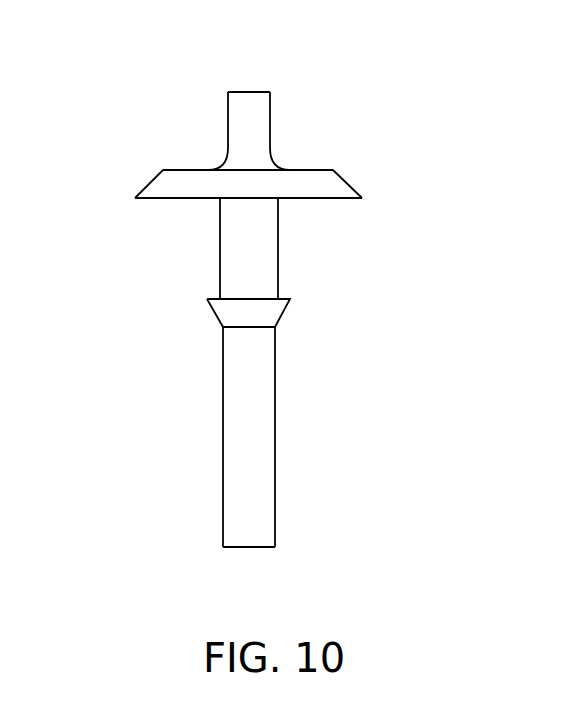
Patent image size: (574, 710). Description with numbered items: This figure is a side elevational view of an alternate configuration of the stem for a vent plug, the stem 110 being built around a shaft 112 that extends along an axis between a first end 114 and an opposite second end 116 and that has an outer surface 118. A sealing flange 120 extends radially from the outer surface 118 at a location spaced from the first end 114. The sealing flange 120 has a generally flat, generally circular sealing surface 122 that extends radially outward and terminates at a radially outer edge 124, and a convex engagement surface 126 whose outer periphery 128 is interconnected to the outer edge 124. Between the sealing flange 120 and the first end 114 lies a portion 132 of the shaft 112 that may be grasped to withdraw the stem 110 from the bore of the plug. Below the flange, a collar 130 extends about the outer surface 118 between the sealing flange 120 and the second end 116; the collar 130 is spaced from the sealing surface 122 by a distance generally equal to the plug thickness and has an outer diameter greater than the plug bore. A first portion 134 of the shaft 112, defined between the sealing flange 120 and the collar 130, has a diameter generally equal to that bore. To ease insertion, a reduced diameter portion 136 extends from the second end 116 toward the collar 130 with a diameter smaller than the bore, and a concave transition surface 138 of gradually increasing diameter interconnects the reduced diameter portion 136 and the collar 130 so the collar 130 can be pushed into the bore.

The stem 110 is at (118, 315).
The shaft 112 is at (275, 405).
The first end 114 is at (278, 85).
The second end 116 is at (261, 555).
The outer surface 118 is at (275, 458).
The sealing flange 120 is at (157, 164).
The sealing surface 122 is at (165, 200).
The radially outer edge 124 is at (352, 200).
The convex engagement surface 126 is at (202, 170).
The outer periphery 128 is at (351, 186).
The collar 130 is at (288, 307).
The portion of shaft 132 is at (227, 110).
The first portion of shaft 134 is at (278, 242).
The reduced diameter portion 136 is at (222, 427).
The concave transition surface 138 is at (213, 315).